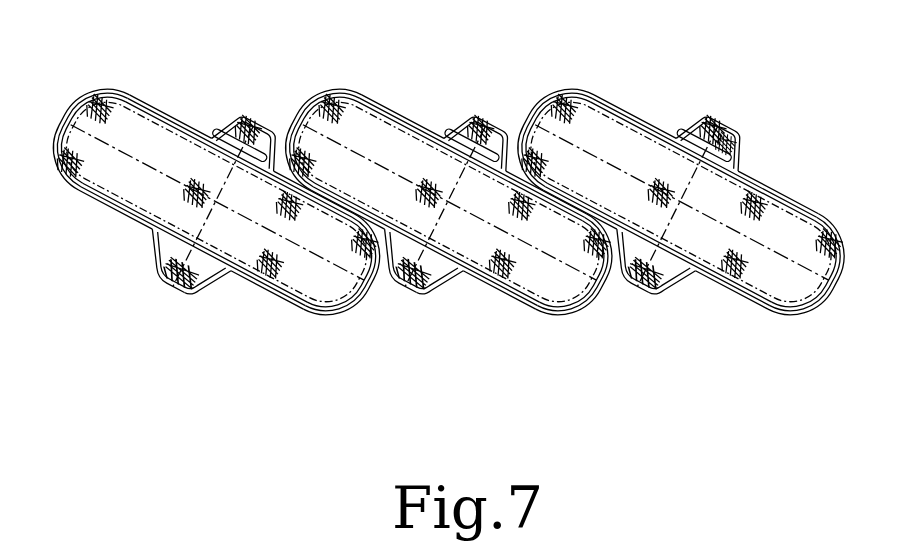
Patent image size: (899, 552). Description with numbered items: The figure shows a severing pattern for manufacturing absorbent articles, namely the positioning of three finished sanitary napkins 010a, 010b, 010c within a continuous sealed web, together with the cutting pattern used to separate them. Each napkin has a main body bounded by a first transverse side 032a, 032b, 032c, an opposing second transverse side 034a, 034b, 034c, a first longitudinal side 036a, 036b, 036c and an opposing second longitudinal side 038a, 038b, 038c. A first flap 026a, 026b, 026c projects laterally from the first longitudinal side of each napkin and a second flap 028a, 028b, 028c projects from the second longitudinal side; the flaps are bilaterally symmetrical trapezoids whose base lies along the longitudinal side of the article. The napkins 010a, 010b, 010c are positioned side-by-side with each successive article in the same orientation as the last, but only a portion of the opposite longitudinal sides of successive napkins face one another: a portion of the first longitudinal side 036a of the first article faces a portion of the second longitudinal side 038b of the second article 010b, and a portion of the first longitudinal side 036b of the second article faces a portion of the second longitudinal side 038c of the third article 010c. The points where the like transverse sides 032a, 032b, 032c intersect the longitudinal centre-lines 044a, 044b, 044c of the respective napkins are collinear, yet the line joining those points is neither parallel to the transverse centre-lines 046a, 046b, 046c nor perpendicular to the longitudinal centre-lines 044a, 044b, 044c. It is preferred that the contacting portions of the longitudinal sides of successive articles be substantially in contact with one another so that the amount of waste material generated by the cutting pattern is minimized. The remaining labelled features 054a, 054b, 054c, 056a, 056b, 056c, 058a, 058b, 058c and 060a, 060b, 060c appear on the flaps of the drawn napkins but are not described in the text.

The napkin 010a is at (691, 216).
The napkin 010b is at (464, 216).
The napkin 010c is at (216, 216).
The first flap 026a is at (650, 283).
The first flap 026b is at (420, 292).
The first flap 026c is at (187, 292).
The second flap 028a is at (733, 127).
The second flap 028b is at (490, 117).
The second flap 028c is at (248, 118).
The first transverse side 032a is at (540, 87).
The first transverse side 032b is at (313, 88).
The first transverse side 032c is at (84, 95).
The second transverse side 034a is at (809, 320).
The second transverse side 034b is at (581, 319).
The second transverse side 034c is at (354, 321).
The first longitudinal side 036a is at (718, 292).
The first longitudinal side 036b is at (490, 295).
The first longitudinal side 036c is at (257, 298).
The second longitudinal side 038a is at (613, 93).
The second longitudinal side 038b is at (382, 97).
The second longitudinal side 038c is at (147, 97).
The longitudinal centre-line 044a is at (840, 283).
The longitudinal centre-line 044b is at (625, 285).
The longitudinal centre-line 044c is at (77, 127).
The transverse centre-line 046a is at (713, 140).
The transverse centre-line 046b is at (403, 284).
The transverse centre-line 046c is at (170, 290).
The second wing outer edge 054a is at (615, 232).
The second wing outer edge 054b is at (384, 232).
The second wing outer edge 054c is at (153, 250).
The second wing side edge 056a is at (673, 280).
The second wing side edge 056b is at (453, 283).
The second wing side edge 056c is at (213, 278).
The first wing adhesive 058a is at (703, 117).
The first wing adhesive 058b is at (480, 117).
The first wing adhesive 058c is at (243, 120).
The wing attachment line 060a is at (743, 143).
The wing attachment line 060b is at (520, 133).
The wing attachment line 060c is at (283, 137).